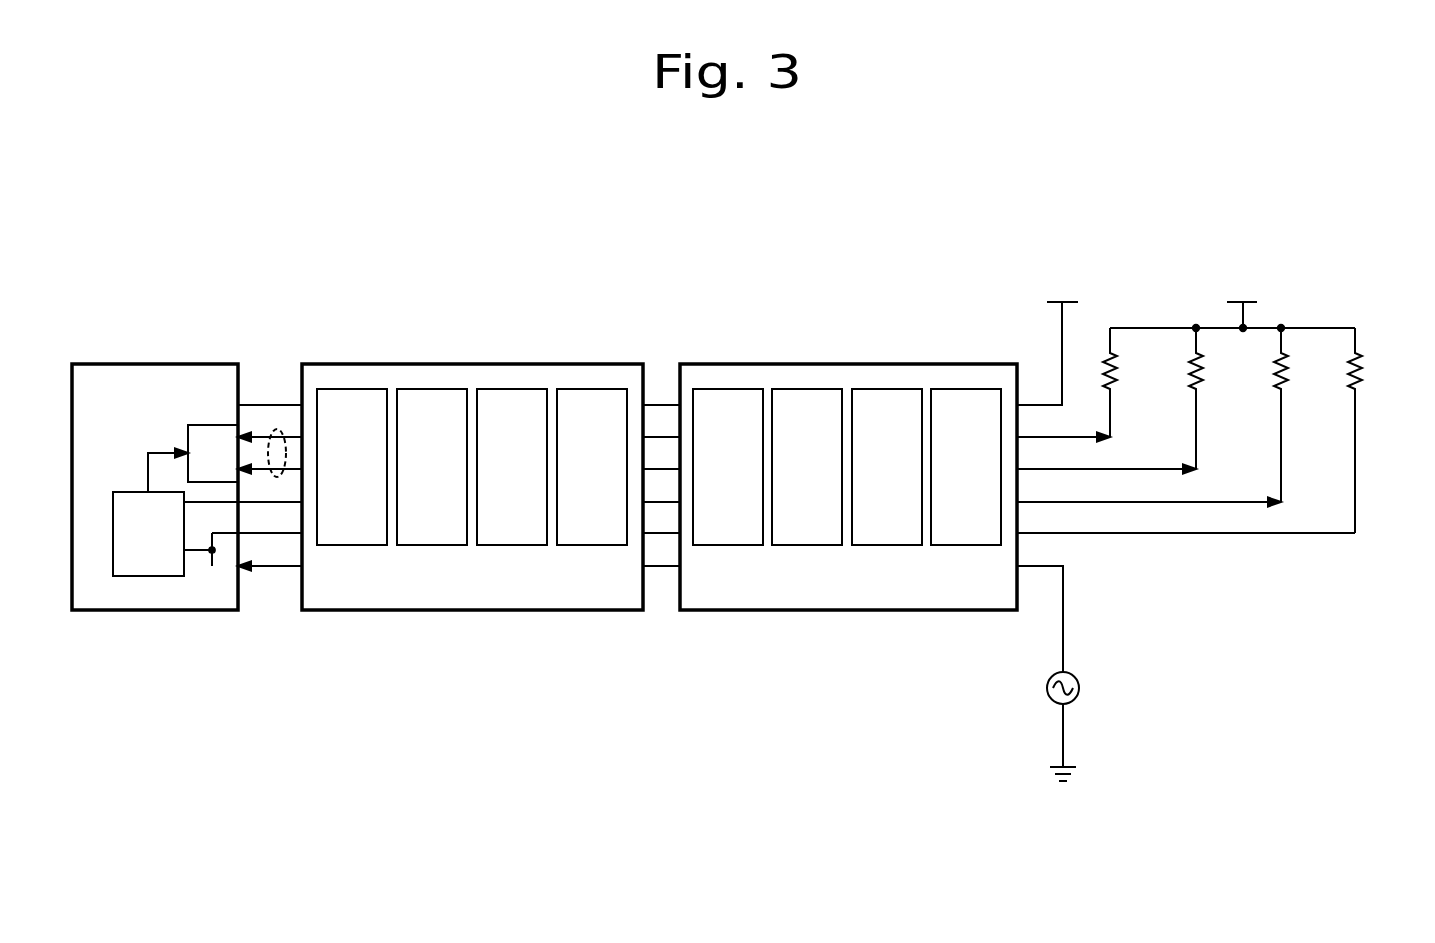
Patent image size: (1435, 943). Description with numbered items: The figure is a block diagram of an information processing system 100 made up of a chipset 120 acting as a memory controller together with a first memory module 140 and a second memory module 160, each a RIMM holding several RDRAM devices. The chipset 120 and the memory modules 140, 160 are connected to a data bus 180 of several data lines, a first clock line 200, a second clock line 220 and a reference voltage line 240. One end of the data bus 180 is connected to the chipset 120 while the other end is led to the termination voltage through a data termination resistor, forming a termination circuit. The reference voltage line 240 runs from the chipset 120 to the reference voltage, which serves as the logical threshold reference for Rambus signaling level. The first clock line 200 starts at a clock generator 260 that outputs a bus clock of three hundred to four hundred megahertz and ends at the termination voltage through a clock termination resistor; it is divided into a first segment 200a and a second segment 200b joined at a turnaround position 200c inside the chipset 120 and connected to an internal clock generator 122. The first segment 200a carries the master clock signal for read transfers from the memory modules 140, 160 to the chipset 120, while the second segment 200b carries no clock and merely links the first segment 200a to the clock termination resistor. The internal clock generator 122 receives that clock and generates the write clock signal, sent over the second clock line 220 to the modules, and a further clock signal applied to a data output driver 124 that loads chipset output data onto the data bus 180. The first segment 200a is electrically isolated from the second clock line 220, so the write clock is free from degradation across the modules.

The information processing system 100 is at (832, 224).
The chipset 120 is at (184, 363).
The internal clock generator 122 is at (167, 548).
The data output driver 124 is at (232, 466).
The first memory module 140 is at (589, 363).
The second memory module 160 is at (960, 363).
The data bus 180 is at (274, 430).
The first clock line 200 is at (1066, 617).
The first segment 200a is at (657, 570).
The second segment 200b is at (1173, 537).
The turnaround position 200c is at (211, 553).
The second clock line 220 is at (1246, 506).
The reference voltage line 240 is at (657, 400).
The clock generator 260 is at (1047, 688).